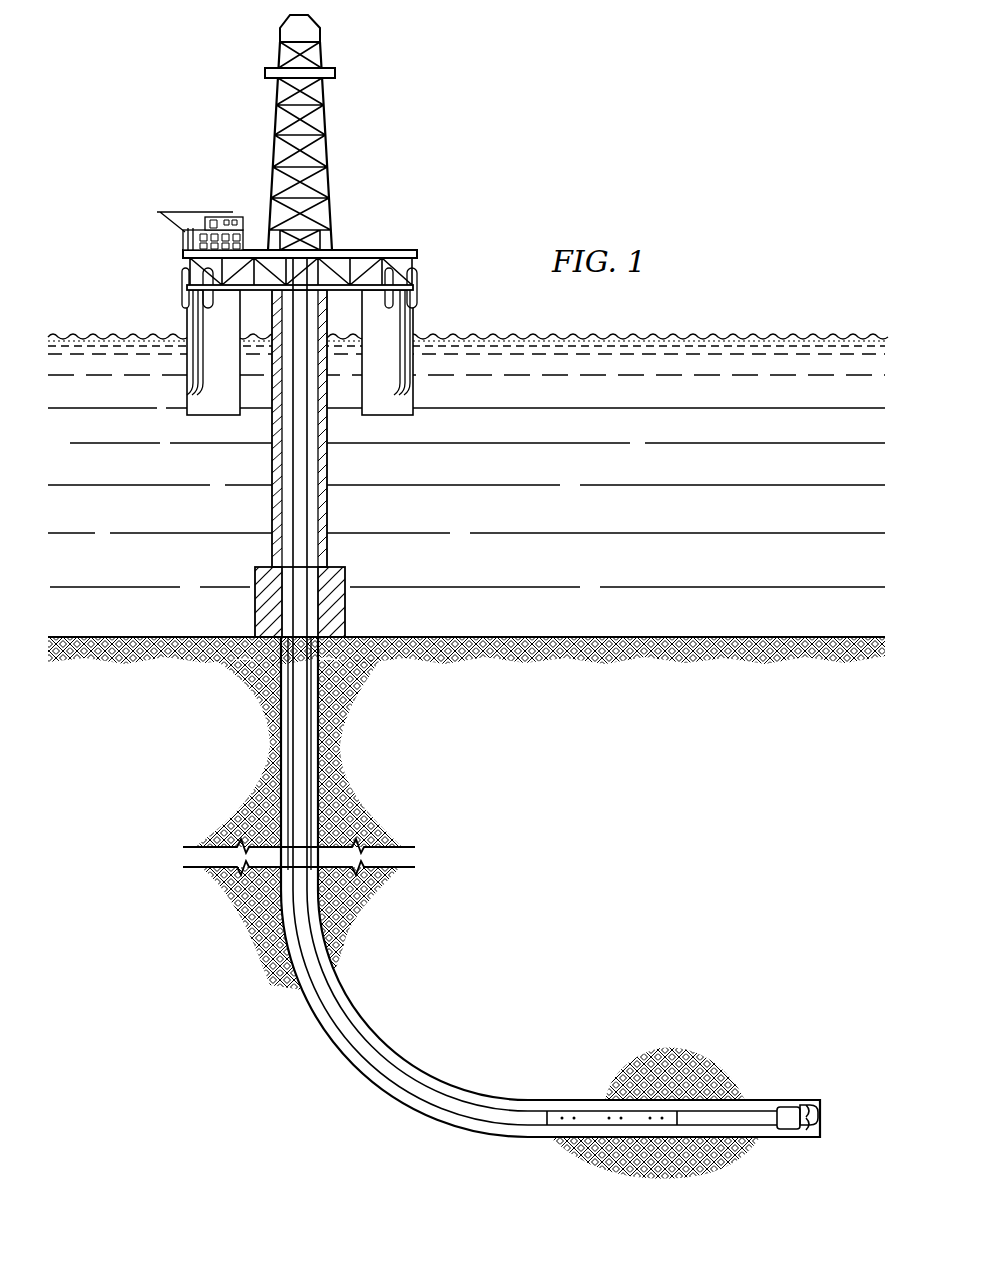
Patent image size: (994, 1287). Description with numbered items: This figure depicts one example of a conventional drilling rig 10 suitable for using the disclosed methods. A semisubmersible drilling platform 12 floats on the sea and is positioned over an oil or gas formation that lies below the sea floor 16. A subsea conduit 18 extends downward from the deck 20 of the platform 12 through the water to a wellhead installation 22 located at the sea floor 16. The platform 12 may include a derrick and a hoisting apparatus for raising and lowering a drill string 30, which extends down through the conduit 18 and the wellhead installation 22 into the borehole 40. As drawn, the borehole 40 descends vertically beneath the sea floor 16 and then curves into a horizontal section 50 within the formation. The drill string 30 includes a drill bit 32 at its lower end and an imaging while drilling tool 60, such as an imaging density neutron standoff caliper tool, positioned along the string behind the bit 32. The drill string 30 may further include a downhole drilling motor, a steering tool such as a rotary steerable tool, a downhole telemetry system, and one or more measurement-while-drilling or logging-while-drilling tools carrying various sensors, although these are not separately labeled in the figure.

The drilling rig 10 is at (396, 142).
The semisubmersible drilling platform 12 is at (405, 250).
The deck 20 is at (412, 290).
The subsea conduit 18 is at (328, 510).
The drill string 30 is at (300, 429).
The wellhead installation 22 is at (337, 566).
The sea floor 16 is at (568, 637).
The borehole 40 is at (280, 746).
The horizontal wellbore section 50 is at (522, 1100).
The imaging while drilling tool 60 is at (595, 1109).
The drill bit 32 is at (792, 1104).